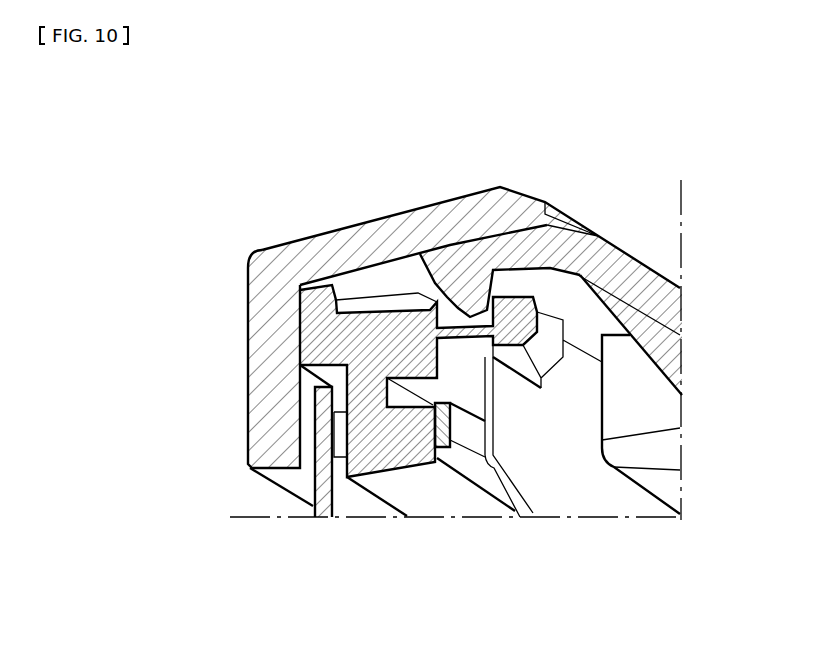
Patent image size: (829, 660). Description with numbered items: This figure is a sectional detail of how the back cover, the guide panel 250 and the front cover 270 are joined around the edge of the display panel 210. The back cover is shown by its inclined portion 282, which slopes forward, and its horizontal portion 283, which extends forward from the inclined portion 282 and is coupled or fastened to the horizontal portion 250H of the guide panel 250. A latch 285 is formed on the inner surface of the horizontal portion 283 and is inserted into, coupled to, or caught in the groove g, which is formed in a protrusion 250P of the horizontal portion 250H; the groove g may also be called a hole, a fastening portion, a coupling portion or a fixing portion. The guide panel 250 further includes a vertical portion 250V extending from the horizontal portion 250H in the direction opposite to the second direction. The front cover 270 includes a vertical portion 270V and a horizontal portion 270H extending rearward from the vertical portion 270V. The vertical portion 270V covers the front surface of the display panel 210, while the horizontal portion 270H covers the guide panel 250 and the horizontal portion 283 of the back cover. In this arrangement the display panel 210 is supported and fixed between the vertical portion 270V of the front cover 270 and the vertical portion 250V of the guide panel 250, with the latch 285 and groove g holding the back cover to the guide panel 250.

The front cover 270 is at (372, 327).
The horizontal portion 270H is at (305, 238).
The vertical portion 270V is at (270, 338).
The horizontal portion 283 is at (513, 243).
The inclined portion 282 is at (657, 322).
The latch 285 is at (447, 327).
The guide panel 250 is at (456, 463).
The vertical portion 250V is at (380, 465).
The horizontal portion 250H is at (420, 367).
The protrusion 250P is at (523, 330).
The groove g is at (466, 330).
The display panel 210 is at (327, 505).